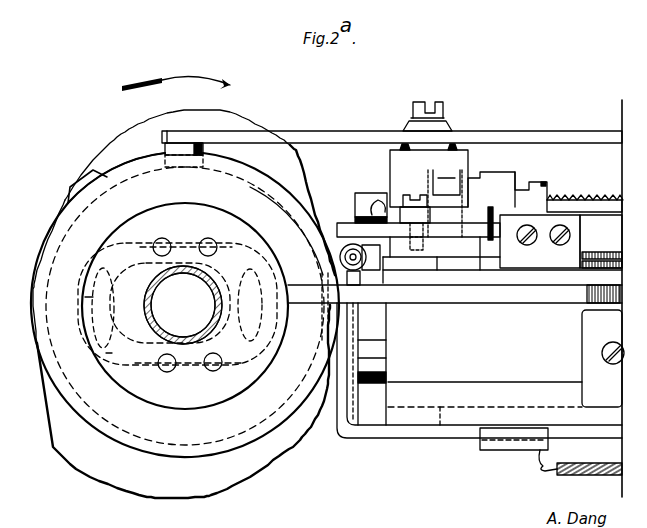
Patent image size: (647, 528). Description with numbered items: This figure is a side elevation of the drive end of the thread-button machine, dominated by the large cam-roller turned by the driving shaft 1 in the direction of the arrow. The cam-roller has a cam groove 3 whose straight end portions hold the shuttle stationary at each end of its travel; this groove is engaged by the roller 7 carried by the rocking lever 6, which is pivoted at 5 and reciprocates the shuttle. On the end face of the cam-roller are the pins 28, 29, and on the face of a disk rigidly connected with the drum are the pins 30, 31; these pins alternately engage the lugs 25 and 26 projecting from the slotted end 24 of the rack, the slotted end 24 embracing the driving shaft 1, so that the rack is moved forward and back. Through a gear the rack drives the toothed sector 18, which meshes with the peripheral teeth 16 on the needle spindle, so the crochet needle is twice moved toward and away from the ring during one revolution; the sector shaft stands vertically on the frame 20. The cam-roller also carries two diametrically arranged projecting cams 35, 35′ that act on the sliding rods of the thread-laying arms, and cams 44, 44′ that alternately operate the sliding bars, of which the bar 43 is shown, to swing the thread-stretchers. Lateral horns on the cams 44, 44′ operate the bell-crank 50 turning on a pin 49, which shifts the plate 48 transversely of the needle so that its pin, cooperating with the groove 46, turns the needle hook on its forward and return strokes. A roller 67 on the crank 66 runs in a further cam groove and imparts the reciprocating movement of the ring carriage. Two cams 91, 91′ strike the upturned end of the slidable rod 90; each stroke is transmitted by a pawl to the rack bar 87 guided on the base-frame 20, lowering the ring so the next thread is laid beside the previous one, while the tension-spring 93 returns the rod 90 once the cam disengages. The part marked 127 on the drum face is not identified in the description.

The driving shaft 1 is at (193, 288).
The groove 3 is at (50, 236).
The pivot 5 is at (442, 122).
The rocking lever 6 is at (379, 131).
The roller 7 is at (186, 150).
The peripheral teeth 16 is at (572, 197).
The toothed sector 18 is at (590, 203).
The frame 20 is at (437, 372).
The slotted end 24 is at (107, 350).
The lug 25 is at (252, 305).
The lug 26 is at (88, 297).
The pin 28 is at (170, 370).
The pin 29 is at (210, 240).
The pin 30 is at (163, 240).
The pin 31 is at (216, 368).
The projecting cam 35 is at (185, 335).
The projecting cam 35' is at (116, 148).
The sliding bar 43 is at (584, 257).
The cam 44 is at (181, 350).
The cam 44' is at (200, 185).
The groove 46 is at (384, 205).
The plate 48 is at (505, 183).
The pin 49 is at (413, 195).
The bell-crank 50 is at (345, 228).
The crank 66 is at (365, 322).
The roller 67 is at (340, 277).
The rack bar 87 is at (455, 417).
The slidable rod 90 is at (360, 433).
The cam 91 is at (302, 465).
The cam 91' is at (75, 174).
The tension-spring 93 is at (565, 477).
The recess 127 is at (152, 323).